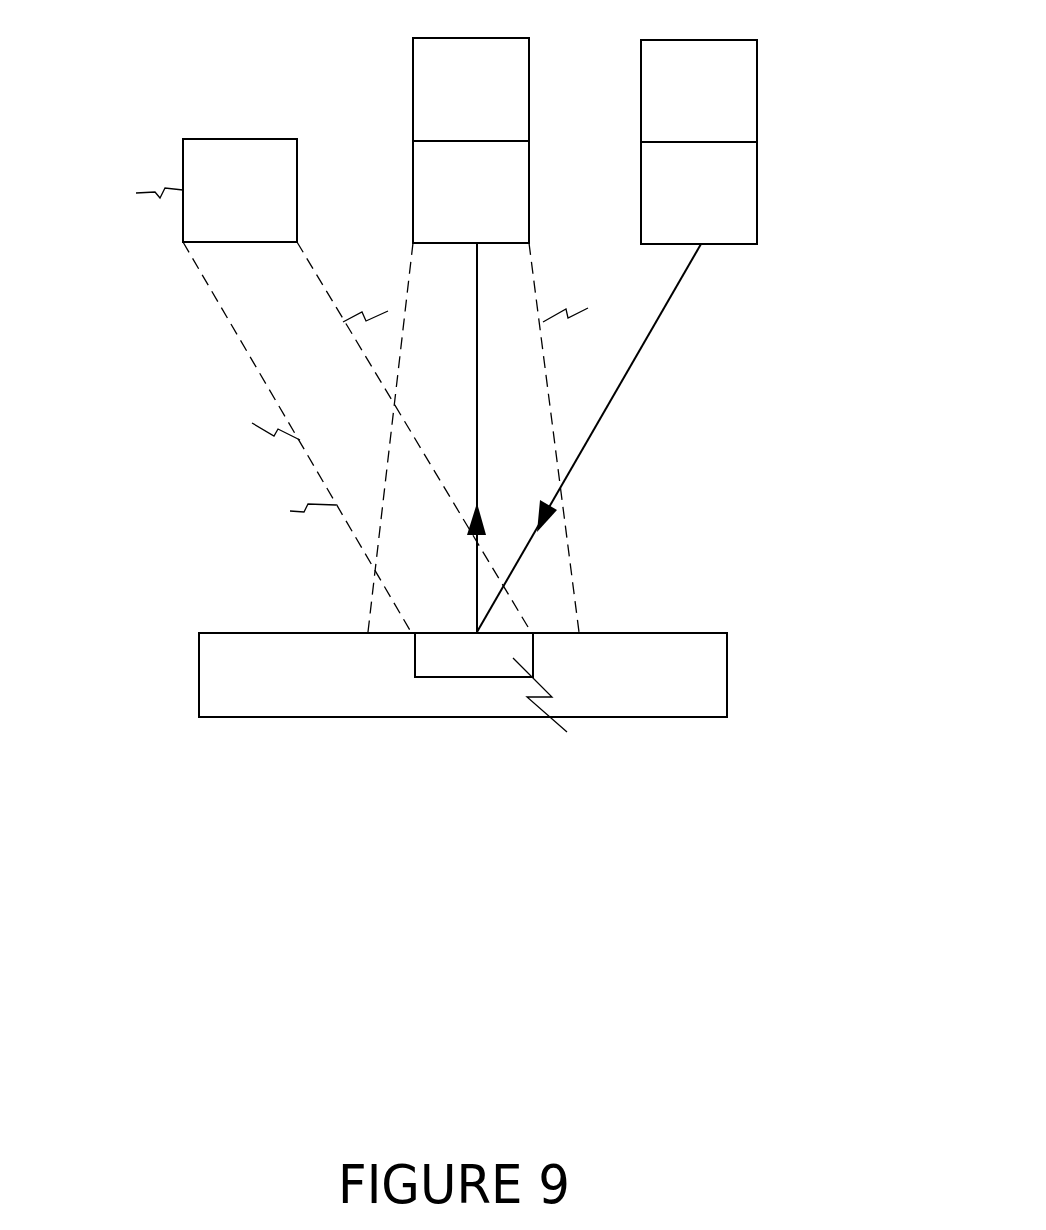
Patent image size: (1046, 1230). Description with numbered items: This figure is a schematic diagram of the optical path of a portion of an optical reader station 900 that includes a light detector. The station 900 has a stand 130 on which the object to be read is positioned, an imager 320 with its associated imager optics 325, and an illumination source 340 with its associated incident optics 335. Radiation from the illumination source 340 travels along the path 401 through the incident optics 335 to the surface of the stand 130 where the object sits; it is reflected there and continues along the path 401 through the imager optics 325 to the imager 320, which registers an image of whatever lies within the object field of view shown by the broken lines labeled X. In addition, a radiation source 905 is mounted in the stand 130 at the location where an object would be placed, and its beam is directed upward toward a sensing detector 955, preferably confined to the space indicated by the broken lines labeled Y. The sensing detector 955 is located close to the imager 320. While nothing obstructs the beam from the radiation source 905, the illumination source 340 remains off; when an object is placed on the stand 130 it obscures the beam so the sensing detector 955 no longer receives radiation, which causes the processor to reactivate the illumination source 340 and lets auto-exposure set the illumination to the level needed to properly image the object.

The optical reader station 900 is at (467, 398).
The sensing detector 955 is at (276, 385).
The imager 320 is at (471, 89).
The imager optics 325 is at (474, 386).
The illumination source 340 is at (699, 91).
The incident optics 335 is at (699, 193).
The path 401 is at (584, 437).
The radiation source 905 is at (619, 696).
The stand 130 is at (463, 675).